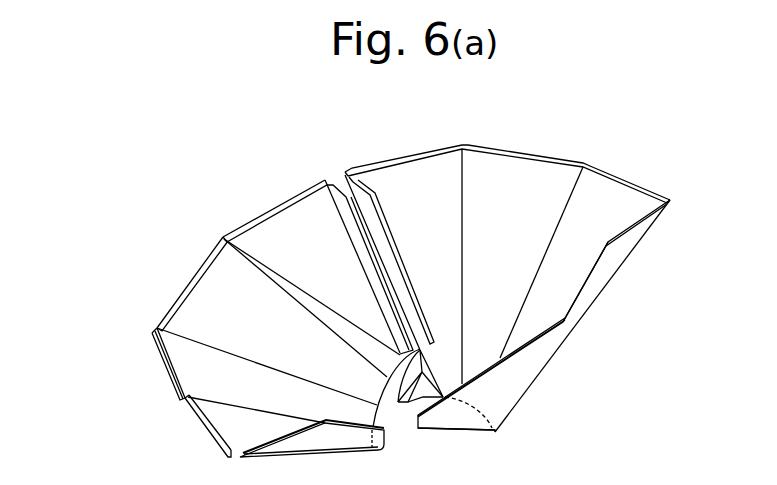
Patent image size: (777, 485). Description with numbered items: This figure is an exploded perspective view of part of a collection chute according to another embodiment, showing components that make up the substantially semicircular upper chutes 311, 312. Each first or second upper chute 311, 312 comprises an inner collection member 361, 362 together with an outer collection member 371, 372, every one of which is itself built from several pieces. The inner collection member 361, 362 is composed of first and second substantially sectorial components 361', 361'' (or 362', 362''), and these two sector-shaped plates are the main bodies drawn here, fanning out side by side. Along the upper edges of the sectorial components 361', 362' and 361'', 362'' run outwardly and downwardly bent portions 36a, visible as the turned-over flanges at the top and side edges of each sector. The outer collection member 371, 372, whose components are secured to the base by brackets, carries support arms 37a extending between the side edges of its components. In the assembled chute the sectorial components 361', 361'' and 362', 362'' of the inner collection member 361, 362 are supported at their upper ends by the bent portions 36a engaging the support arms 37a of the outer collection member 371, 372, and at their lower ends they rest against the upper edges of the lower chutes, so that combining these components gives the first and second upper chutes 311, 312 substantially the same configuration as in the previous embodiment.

The first upper chute 311 is at (396, 295).
The second upper chute 312 is at (110, 372).
The inner collection member 361 is at (478, 456).
The inner collection member 362 is at (478, 456).
The first substantially sectorial component 361' is at (254, 292).
The first substantially sectorial component 362' is at (254, 292).
The second substantially sectorial component 361'' is at (548, 279).
The second substantially sectorial component 362'' is at (548, 279).
The bent portion 36a is at (365, 168).
The outer collection member 371 is at (341, 417).
The outer collection member 372 is at (341, 417).
The support arm 37a is at (506, 402).